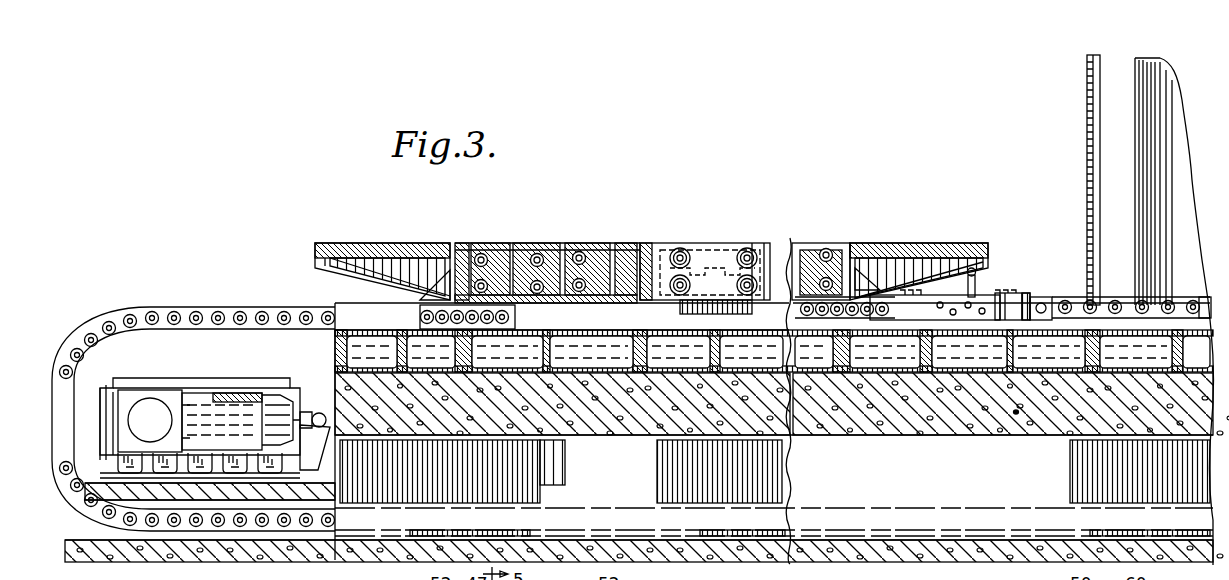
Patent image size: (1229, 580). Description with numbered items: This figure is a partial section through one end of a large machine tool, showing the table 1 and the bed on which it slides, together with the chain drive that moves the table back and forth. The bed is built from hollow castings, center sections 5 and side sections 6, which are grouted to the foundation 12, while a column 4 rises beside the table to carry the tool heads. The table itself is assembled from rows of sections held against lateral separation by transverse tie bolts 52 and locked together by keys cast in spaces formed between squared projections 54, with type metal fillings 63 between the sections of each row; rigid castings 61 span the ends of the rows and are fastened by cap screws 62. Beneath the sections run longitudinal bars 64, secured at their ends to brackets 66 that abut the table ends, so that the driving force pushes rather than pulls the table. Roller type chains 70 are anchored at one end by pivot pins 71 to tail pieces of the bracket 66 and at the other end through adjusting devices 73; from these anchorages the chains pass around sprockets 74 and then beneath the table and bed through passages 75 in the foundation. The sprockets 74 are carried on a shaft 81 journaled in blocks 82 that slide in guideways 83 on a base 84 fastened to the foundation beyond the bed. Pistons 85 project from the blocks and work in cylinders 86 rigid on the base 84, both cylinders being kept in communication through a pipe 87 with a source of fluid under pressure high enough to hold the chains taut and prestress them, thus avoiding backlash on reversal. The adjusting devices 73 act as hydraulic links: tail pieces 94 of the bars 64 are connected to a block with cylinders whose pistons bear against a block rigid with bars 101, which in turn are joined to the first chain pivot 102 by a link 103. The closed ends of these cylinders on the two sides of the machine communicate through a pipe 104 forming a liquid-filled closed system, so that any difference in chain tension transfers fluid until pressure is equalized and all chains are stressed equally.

The table 1 is at (826, 232).
The column 4 is at (1145, 212).
The center section 5 is at (1178, 308).
The side section 6 is at (455, 374).
The foundation 12 is at (1015, 414).
The tie bolt 52 is at (524, 246).
The squared projection 54 is at (706, 245).
The rigid casting 61 is at (394, 245).
The cap screw 62 is at (456, 243).
The filling 63 is at (548, 245).
The bar 64 is at (590, 332).
The bracket 66 is at (867, 285).
The roller type chain 70 is at (261, 313).
The pivot pin 71 is at (386, 298).
The adjusting device 73 is at (987, 287).
The sprocket 74 is at (187, 326).
The passage 75 is at (932, 436).
The shaft 81 is at (132, 430).
The block 82 is at (125, 414).
The guideway 83 is at (112, 398).
The base 84 is at (135, 478).
The piston 85 is at (203, 403).
The cylinder 86 is at (246, 394).
The pipe 87 is at (314, 412).
The tail piece 94 is at (912, 308).
The bar 101 is at (966, 298).
The chain pivot 102 is at (1043, 303).
The link 103 is at (1027, 296).
The pipe 104 is at (977, 272).